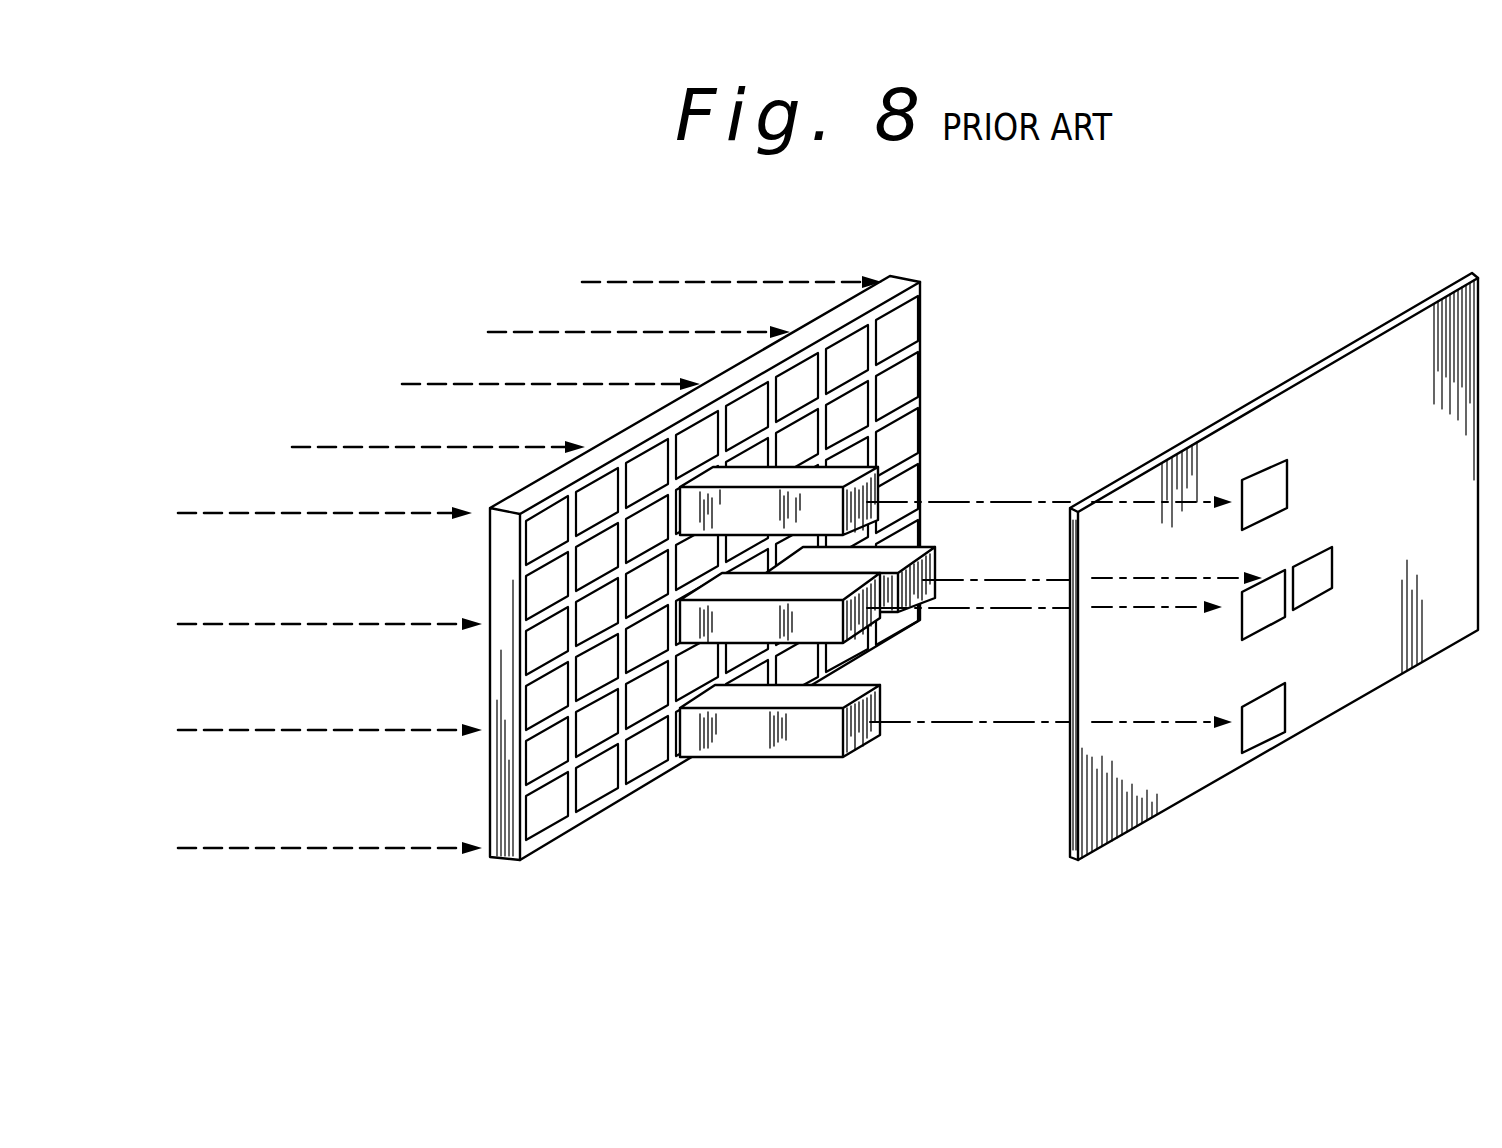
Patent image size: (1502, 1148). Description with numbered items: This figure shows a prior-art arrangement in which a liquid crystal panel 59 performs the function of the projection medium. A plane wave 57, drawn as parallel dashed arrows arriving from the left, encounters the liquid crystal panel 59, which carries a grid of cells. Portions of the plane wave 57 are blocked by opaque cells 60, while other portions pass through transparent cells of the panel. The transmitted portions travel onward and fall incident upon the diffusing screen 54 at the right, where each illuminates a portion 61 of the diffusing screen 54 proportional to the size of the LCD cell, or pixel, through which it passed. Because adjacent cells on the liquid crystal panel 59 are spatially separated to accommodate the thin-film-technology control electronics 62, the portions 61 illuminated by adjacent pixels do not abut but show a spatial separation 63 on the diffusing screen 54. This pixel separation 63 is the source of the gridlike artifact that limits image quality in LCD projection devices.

The diffusing screen 54 is at (1072, 862).
The plane wave 57 is at (318, 407).
The liquid crystal panel 59 is at (503, 866).
The opaque cells 60 is at (890, 445).
The illuminated portion 61 is at (1265, 493).
The thin-film-technology control electronics 62 is at (652, 723).
The spatial separation 63 is at (1288, 566).